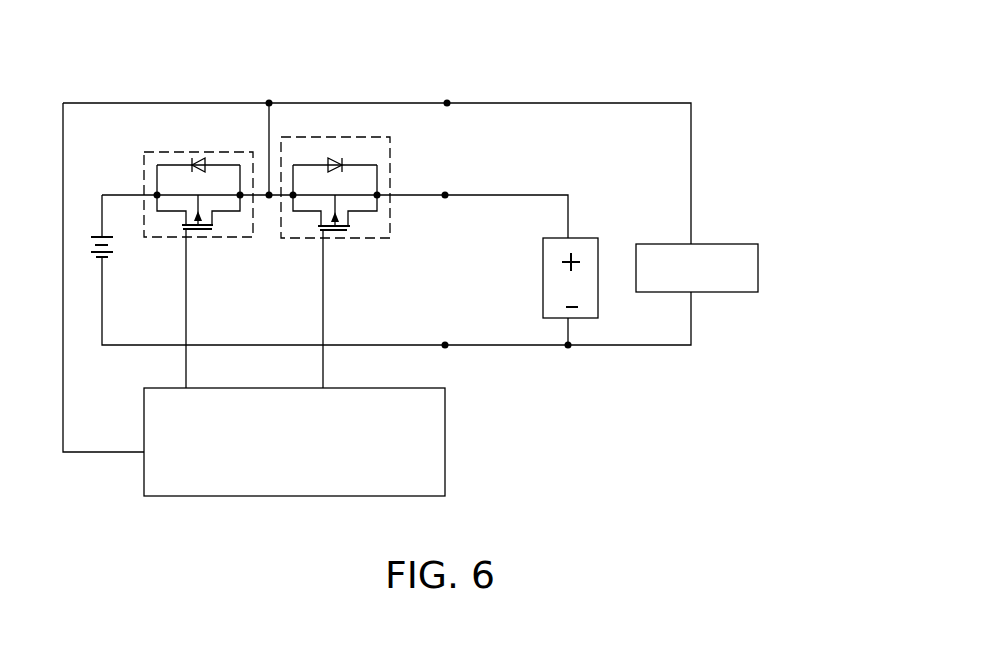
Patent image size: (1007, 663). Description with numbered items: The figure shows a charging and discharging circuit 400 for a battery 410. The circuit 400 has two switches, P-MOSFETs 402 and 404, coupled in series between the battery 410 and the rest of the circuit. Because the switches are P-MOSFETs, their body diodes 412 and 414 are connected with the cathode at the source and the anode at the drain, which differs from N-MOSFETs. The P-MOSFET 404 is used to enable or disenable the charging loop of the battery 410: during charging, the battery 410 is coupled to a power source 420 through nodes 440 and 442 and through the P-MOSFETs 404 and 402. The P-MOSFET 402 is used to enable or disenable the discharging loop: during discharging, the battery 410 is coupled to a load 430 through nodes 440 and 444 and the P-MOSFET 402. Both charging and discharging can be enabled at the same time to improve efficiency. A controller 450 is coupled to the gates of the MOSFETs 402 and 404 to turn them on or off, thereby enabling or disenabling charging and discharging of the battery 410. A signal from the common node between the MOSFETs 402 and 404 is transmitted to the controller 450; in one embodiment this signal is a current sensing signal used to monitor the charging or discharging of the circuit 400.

The circuit 400 is at (688, 43).
The P-MOSFET 402 is at (217, 238).
The P-MOSFET 404 is at (365, 238).
The battery 410 is at (112, 252).
The body diode 412 is at (214, 152).
The body diode 414 is at (328, 158).
The power source 420 is at (575, 238).
The load 430 is at (703, 243).
The node 440 is at (445, 345).
The node 442 is at (445, 195).
The node 444 is at (447, 103).
The controller 450 is at (445, 435).